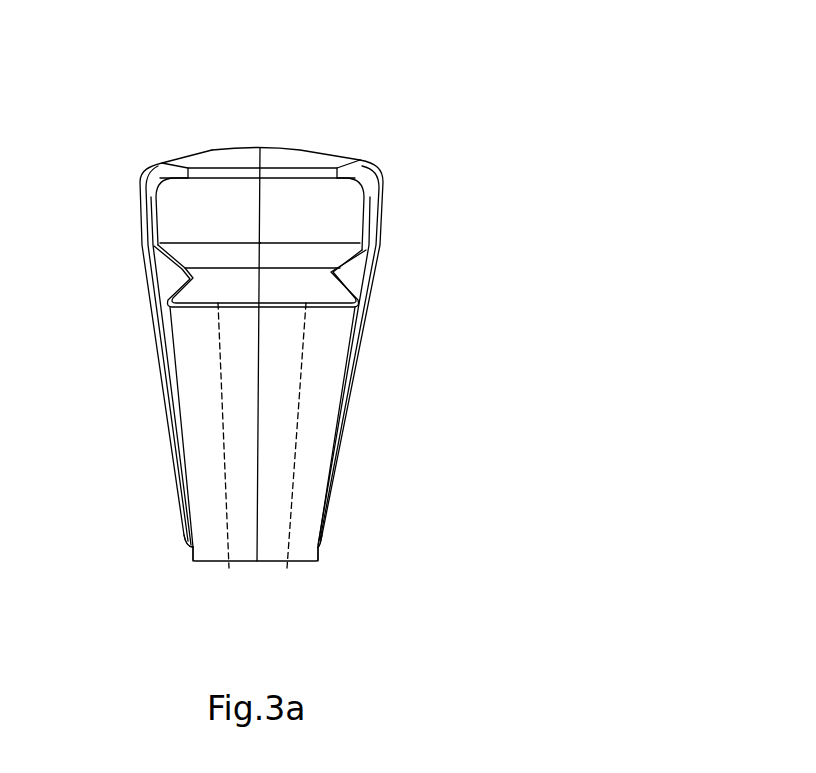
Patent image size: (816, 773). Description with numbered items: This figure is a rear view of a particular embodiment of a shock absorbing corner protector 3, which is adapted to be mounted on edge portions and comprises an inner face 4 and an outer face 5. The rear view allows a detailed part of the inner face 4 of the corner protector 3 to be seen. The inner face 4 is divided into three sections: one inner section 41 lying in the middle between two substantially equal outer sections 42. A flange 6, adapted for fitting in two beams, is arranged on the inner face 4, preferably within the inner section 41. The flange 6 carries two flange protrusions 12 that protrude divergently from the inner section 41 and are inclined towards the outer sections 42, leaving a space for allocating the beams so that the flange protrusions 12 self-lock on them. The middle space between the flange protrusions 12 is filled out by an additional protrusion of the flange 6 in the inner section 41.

The corner protector 3 is at (175, 109).
The outer face 5 is at (316, 160).
The flange 6 is at (330, 253).
The flange protrusions 12 is at (188, 295).
The inner section 41 is at (277, 455).
The outer sections 42 is at (210, 547).
The inner face 4 is at (273, 547).